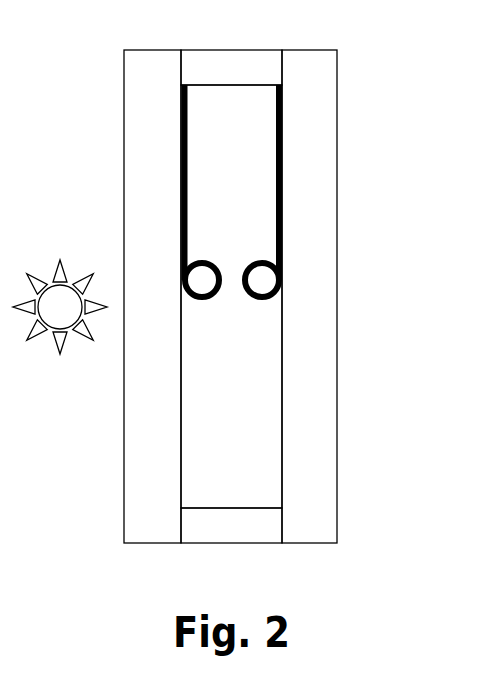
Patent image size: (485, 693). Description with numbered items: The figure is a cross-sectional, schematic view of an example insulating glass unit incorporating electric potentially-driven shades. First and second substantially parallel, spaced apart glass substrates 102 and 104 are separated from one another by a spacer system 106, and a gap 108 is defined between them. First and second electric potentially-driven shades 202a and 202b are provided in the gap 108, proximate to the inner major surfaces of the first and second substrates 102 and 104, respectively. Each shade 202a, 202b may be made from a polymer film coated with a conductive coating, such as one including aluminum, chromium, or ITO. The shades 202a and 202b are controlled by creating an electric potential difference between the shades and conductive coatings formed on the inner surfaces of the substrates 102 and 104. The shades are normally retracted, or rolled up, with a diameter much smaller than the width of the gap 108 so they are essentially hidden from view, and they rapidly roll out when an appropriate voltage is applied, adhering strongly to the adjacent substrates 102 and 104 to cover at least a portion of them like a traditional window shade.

The first glass substrate 102 is at (124, 118).
The second glass substrate 104 is at (337, 115).
The spacer system 106 is at (229, 50).
The gap 108 is at (250, 410).
The first electric potentially-driven shade 202a is at (204, 300).
The second electric potentially-driven shade 202b is at (261, 300).